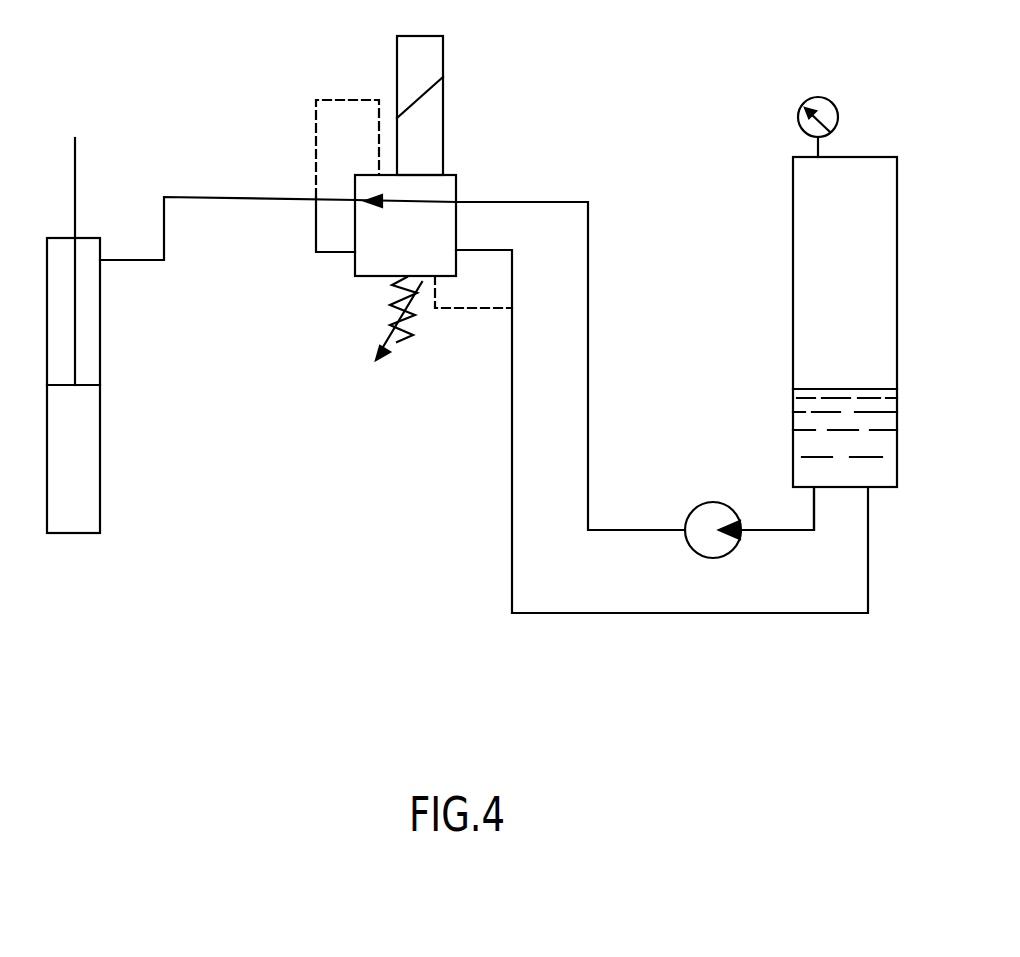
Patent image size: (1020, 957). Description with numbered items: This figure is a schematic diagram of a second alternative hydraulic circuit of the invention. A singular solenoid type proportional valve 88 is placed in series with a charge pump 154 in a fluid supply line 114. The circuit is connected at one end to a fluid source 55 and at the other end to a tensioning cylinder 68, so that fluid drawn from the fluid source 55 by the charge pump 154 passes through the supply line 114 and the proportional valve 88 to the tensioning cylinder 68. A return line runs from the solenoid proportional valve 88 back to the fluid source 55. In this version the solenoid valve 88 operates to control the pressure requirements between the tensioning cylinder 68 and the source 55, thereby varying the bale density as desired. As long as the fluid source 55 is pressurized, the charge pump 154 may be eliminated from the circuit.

The tensioning cylinder 68 is at (83, 467).
The solenoid type proportional valve 88 is at (440, 173).
The fluid source 55 is at (792, 317).
The charge pump 154 is at (688, 518).
The fluid supply line 114 is at (793, 528).